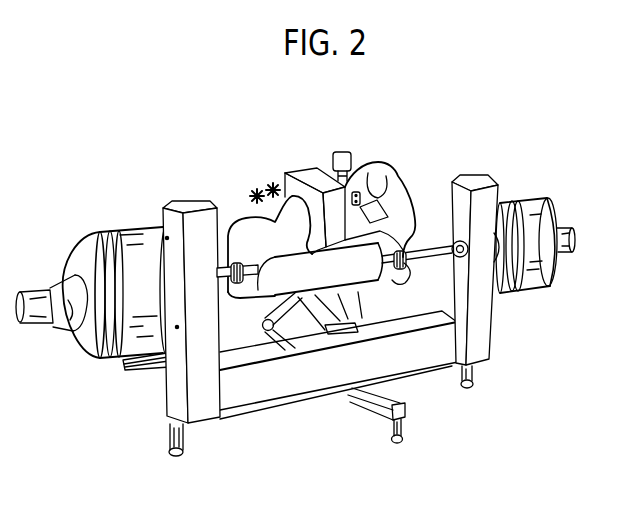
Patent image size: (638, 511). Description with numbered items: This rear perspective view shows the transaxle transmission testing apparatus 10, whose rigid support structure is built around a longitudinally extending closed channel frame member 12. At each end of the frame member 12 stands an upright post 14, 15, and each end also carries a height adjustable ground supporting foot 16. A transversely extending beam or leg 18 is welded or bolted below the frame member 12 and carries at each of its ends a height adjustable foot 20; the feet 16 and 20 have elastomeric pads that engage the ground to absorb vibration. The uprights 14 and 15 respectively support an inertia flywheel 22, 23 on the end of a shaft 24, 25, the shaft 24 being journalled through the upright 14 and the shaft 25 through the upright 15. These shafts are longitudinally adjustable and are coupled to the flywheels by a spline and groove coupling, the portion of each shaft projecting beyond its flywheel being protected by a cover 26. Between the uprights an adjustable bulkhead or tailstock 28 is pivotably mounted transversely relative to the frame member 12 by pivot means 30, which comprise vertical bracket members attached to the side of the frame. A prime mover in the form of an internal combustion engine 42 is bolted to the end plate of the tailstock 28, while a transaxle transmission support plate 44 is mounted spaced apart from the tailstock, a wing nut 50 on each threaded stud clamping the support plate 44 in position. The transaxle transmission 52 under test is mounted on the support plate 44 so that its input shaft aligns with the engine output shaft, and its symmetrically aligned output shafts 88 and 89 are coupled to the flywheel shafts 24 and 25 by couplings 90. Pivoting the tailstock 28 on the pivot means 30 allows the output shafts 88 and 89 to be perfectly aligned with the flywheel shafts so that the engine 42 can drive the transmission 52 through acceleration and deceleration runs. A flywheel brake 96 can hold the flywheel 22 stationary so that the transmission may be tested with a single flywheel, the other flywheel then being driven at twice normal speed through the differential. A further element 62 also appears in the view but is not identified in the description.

The transaxle transmission testing apparatus 10 is at (543, 352).
The longitudinally extending closed channel frame member 12 is at (431, 368).
The upright post 14 is at (491, 317).
The upright post 15 is at (200, 423).
The height adjustable ground supporting foot 16 is at (177, 456).
The transversely extending beam or leg 18 is at (374, 408).
The height adjustable foot 20 is at (398, 446).
The inertia flywheel 22 is at (542, 215).
The inertia flywheel 23 is at (148, 343).
The shaft 24 is at (432, 258).
The shaft 25 is at (228, 268).
The cover 26 is at (60, 320).
The adjustable bulkhead or tailstock 28 is at (301, 168).
The pivot means 30 is at (338, 334).
The internal combustion engine 42 is at (400, 164).
The transaxle transmission support plate 44 is at (290, 178).
The wing nut 50 is at (254, 192).
The transaxle transmission 52 is at (359, 290).
The lever 62 is at (297, 316).
The output shaft 88 is at (403, 252).
The output shaft 89 is at (280, 279).
The coupling 90 is at (229, 294).
The flywheel brake 96 is at (125, 367).